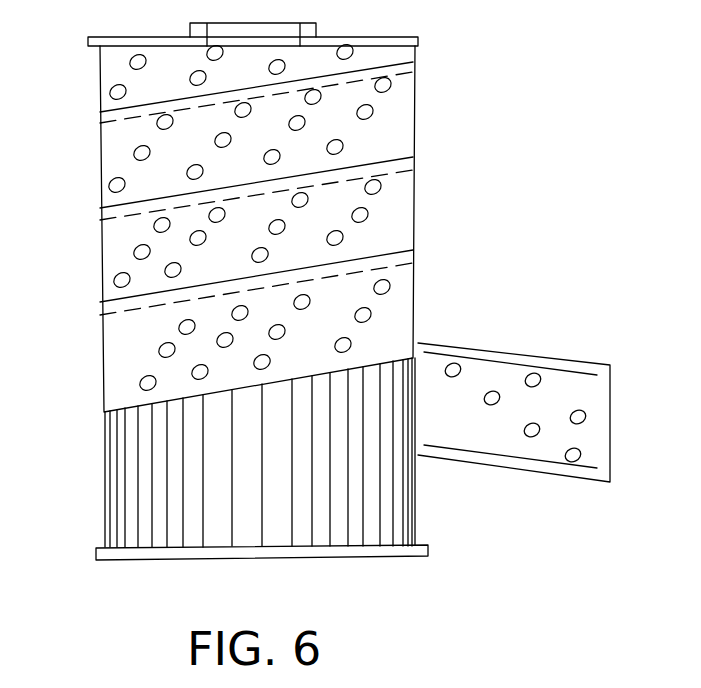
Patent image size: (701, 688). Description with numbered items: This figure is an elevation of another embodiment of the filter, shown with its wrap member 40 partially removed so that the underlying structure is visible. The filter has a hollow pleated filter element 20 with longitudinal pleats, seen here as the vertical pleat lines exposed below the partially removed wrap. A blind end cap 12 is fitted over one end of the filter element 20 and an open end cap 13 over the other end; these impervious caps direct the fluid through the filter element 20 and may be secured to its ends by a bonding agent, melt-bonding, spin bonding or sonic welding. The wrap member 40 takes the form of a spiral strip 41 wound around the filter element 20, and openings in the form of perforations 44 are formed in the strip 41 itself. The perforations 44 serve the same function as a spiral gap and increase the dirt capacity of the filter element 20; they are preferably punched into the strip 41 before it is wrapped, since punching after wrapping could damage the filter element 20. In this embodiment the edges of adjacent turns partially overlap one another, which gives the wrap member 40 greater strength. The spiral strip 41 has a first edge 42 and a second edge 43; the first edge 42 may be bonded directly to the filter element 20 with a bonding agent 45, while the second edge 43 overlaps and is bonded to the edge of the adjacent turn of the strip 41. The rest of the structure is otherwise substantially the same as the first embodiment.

The blind end cap 12 is at (430, 549).
The open end cap 13 is at (418, 40).
The filter element 20 is at (155, 497).
The wrap member 40 is at (432, 206).
The spiral strip 41 is at (400, 229).
The first edge 42 is at (560, 478).
The second edge 43 is at (505, 350).
The perforations 44 is at (585, 417).
The bonding agent 45 is at (592, 374).